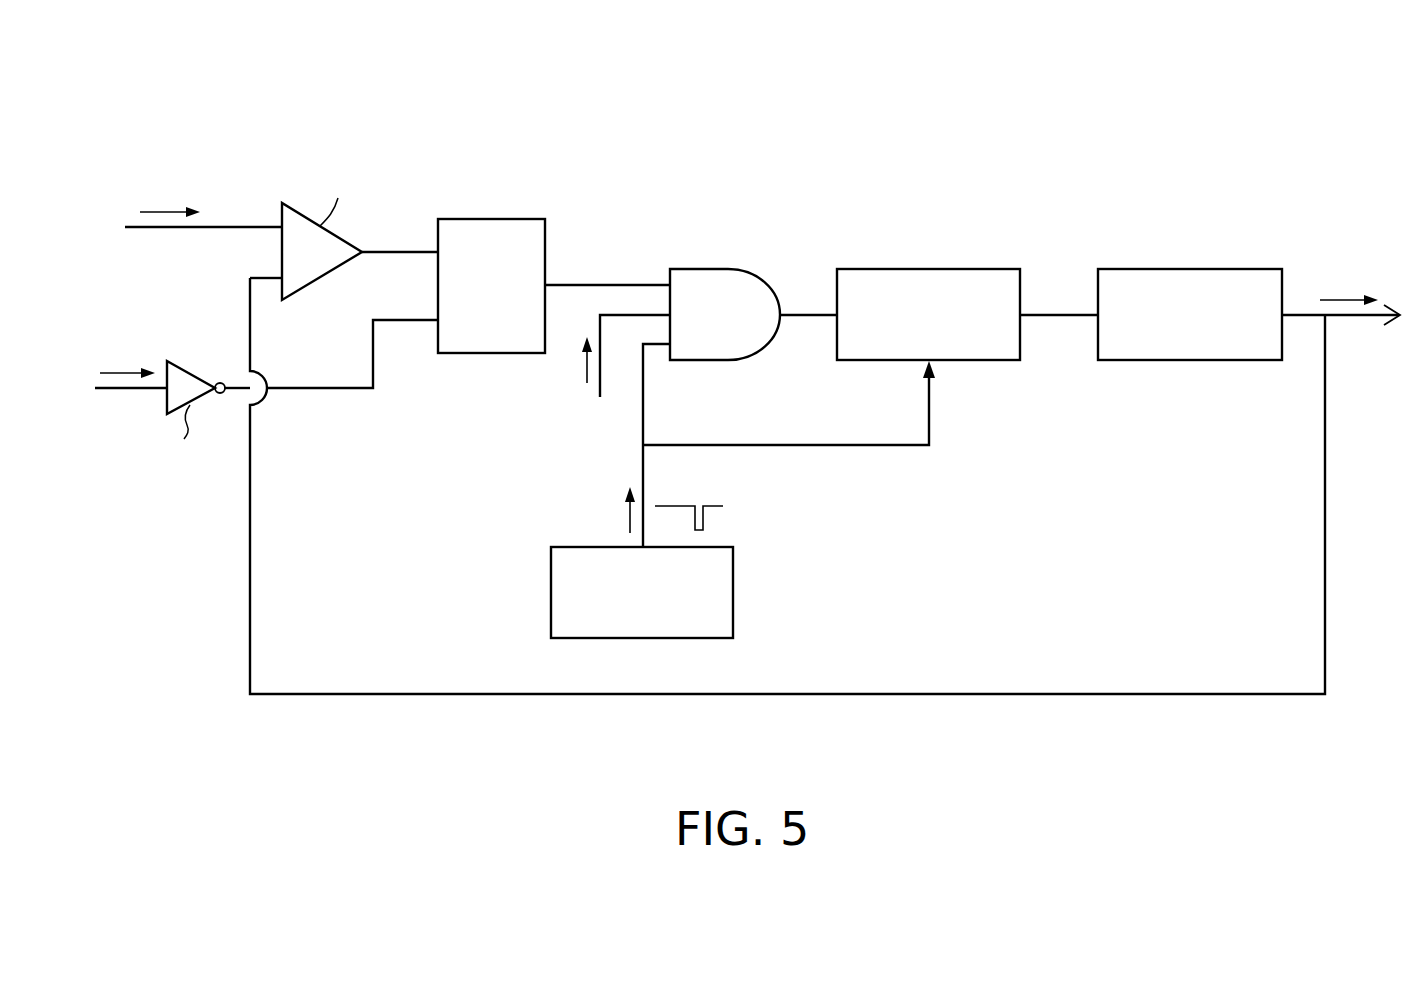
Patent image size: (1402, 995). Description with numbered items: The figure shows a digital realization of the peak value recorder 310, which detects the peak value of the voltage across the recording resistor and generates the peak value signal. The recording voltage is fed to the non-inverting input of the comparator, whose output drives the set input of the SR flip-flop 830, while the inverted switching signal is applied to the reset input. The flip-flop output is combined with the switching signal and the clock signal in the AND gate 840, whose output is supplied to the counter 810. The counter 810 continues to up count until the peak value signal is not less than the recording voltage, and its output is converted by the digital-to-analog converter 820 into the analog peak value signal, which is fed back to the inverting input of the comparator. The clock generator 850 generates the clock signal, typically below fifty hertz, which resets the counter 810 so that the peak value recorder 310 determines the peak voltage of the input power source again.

The peak value recorder 310 is at (747, 357).
The SR flip-flop 830 is at (493, 219).
The AND gate 840 is at (716, 269).
The counter 810 is at (929, 269).
The digital-to-analog converter 820 is at (1190, 269).
The clock generator 850 is at (733, 592).